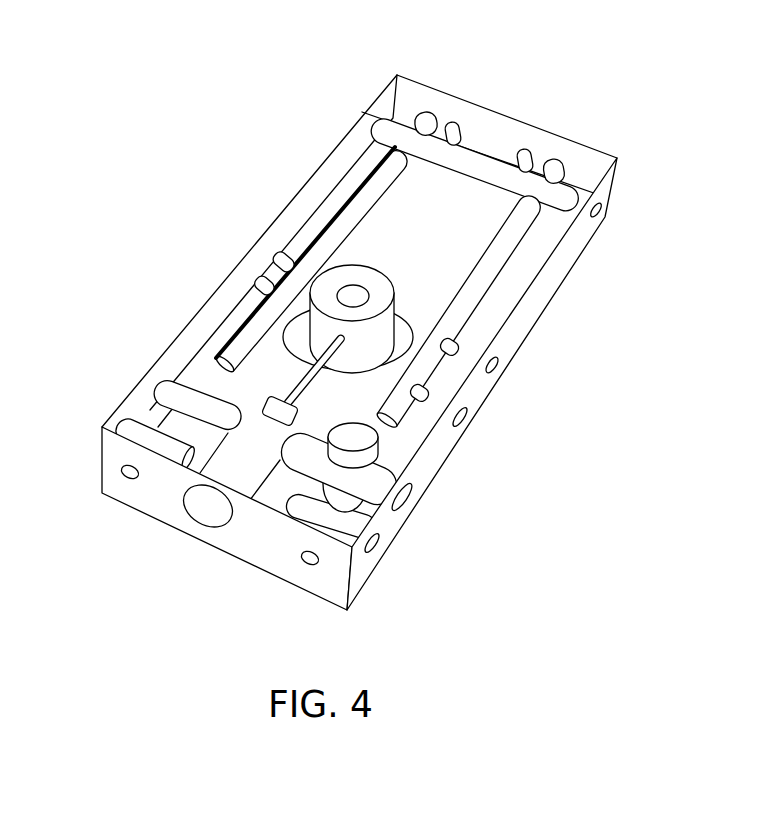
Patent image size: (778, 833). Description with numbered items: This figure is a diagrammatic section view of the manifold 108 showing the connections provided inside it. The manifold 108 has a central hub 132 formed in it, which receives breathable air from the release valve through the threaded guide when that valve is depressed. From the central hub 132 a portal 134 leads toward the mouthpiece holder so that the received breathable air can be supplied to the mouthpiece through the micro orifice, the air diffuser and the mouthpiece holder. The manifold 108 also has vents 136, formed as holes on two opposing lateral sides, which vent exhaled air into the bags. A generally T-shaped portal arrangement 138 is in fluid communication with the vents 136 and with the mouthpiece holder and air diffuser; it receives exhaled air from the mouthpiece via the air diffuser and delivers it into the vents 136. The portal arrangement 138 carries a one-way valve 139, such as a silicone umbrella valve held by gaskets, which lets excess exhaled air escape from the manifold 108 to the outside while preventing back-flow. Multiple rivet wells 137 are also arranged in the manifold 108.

The manifold 108 is at (345, 326).
The central hub 132 is at (383, 328).
The portal 134 is at (297, 380).
The vents 136 is at (412, 507).
The rivet wells 137 is at (478, 158).
The portal arrangement 138 is at (179, 386).
The one-way valve 139 is at (350, 443).